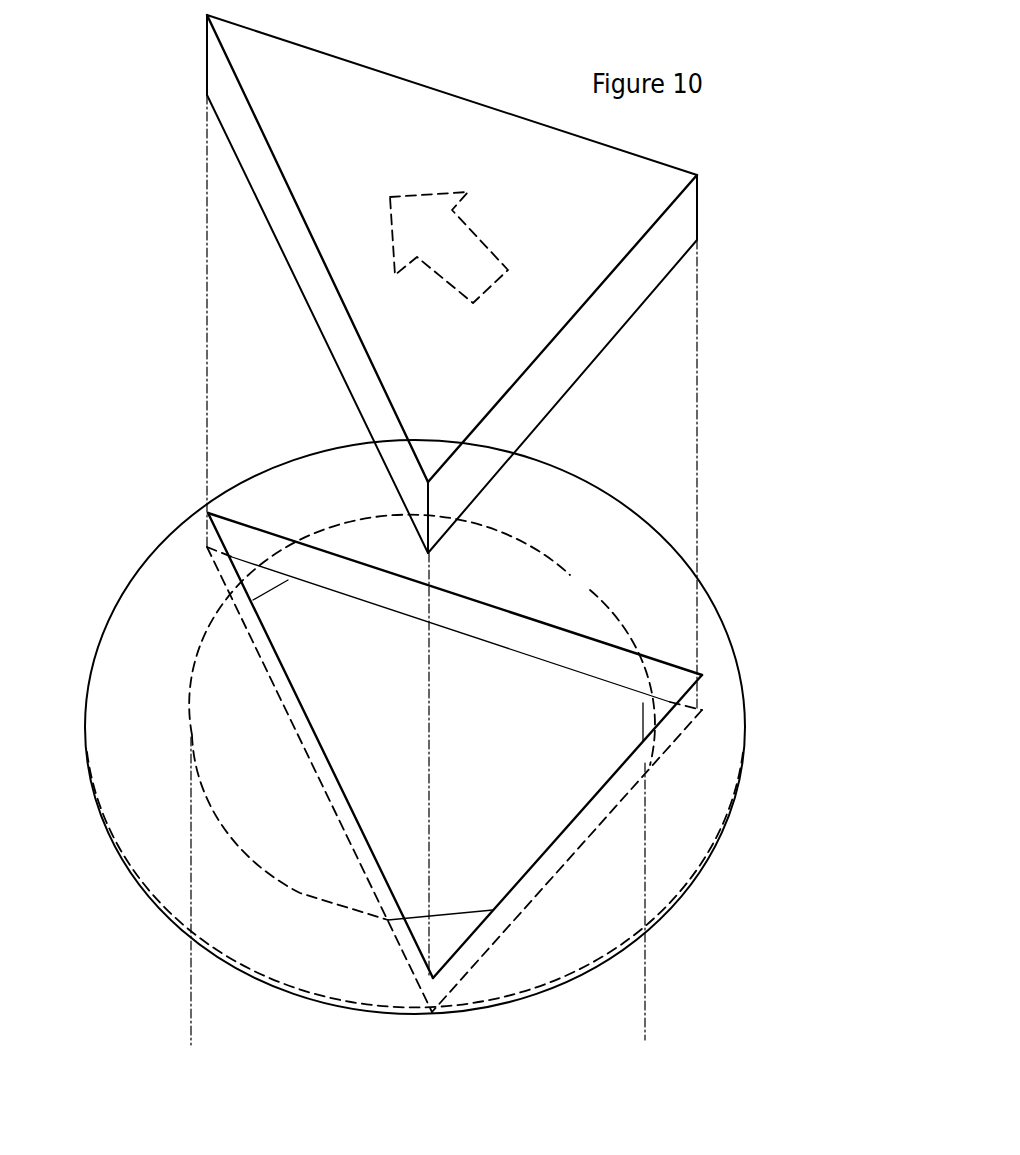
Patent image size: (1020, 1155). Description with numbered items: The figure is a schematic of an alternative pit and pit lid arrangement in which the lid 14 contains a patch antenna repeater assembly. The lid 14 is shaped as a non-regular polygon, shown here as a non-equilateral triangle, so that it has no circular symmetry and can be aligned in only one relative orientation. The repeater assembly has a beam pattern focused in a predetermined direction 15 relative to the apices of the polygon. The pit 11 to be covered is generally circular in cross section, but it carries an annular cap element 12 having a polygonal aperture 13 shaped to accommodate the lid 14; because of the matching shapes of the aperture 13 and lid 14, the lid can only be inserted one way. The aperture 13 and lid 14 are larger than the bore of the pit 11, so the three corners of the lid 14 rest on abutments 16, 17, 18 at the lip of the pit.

The pit 11 is at (421, 579).
The annular cap element 12 is at (401, 727).
The polygonal aperture 13 is at (454, 762).
The lid 14 is at (452, 284).
The predetermined direction 15 is at (449, 247).
The abutment 16 is at (265, 584).
The abutment 17 is at (625, 722).
The abutment 18 is at (440, 929).